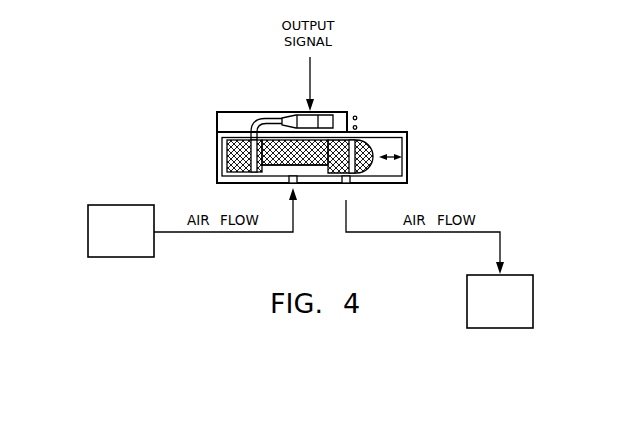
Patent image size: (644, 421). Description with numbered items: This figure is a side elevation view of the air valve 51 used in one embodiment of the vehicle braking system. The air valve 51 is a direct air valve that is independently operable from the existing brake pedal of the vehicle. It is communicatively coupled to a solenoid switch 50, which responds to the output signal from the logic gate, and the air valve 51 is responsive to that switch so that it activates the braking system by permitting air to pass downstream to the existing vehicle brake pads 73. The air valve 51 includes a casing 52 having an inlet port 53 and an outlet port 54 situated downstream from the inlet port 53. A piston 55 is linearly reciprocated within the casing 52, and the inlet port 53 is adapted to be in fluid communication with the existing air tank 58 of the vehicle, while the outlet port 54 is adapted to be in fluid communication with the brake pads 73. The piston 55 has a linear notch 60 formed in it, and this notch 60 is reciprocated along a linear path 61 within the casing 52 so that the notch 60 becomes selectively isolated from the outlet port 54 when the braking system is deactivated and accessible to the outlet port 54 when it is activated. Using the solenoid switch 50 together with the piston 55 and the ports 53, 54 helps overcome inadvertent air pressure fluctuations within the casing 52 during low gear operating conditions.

The solenoid switch 50 is at (296, 114).
The air valve 51 is at (312, 120).
The casing 52 is at (398, 136).
The inlet port 53 is at (290, 184).
The outlet port 54 is at (345, 184).
The piston 55 is at (301, 150).
The air tank 58 is at (122, 206).
The linear notch 60 is at (283, 170).
The linear path 61 is at (391, 157).
The brake pads 73 is at (520, 280).